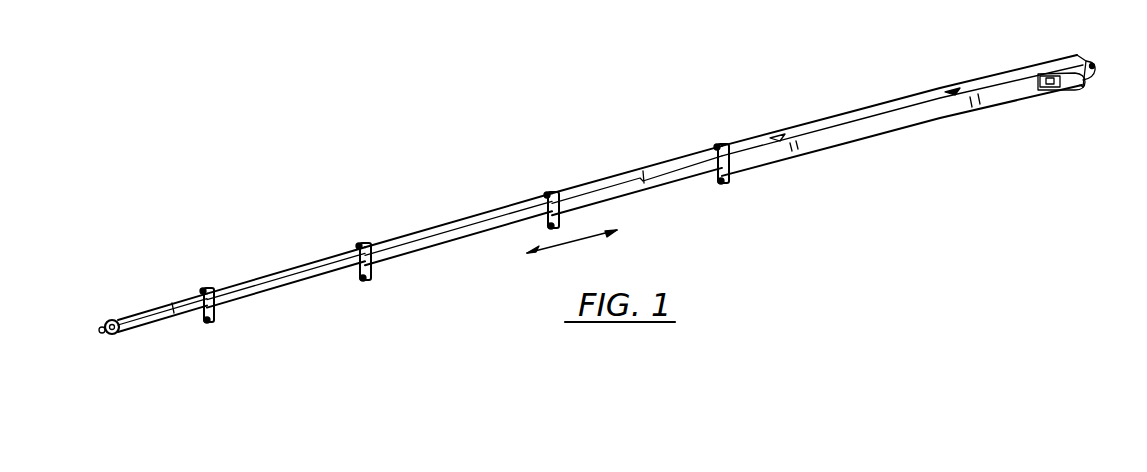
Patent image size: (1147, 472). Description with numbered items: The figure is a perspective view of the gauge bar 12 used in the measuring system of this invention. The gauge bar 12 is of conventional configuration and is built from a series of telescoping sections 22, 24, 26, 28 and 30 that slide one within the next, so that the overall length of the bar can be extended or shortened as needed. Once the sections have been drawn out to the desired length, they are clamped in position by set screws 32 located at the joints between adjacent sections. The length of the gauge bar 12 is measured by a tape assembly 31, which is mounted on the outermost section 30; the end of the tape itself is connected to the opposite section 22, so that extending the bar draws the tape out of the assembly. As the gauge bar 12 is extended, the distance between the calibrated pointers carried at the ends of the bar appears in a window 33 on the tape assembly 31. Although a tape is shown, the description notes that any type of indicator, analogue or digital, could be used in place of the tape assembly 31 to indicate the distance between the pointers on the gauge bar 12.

The gauge bar 12 is at (518, 135).
The telescoping section 22 is at (173, 303).
The telescoping section 24 is at (278, 273).
The telescoping section 26 is at (470, 226).
The telescoping section 28 is at (636, 177).
The telescoping section 30 is at (892, 66).
The tape assembly 31 is at (1080, 86).
The set screws 32 is at (210, 321).
The window 33 is at (1050, 91).